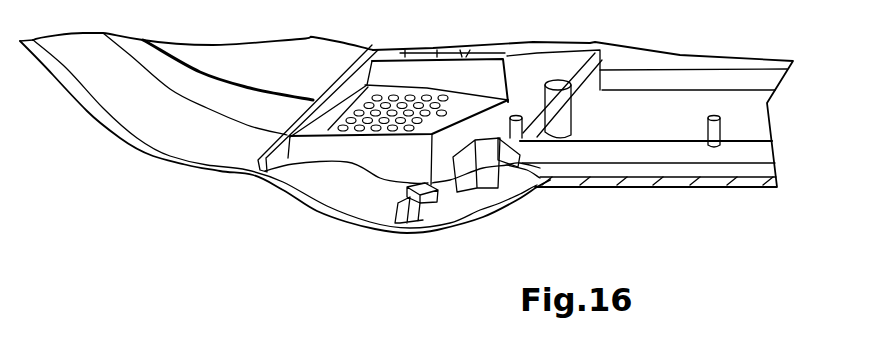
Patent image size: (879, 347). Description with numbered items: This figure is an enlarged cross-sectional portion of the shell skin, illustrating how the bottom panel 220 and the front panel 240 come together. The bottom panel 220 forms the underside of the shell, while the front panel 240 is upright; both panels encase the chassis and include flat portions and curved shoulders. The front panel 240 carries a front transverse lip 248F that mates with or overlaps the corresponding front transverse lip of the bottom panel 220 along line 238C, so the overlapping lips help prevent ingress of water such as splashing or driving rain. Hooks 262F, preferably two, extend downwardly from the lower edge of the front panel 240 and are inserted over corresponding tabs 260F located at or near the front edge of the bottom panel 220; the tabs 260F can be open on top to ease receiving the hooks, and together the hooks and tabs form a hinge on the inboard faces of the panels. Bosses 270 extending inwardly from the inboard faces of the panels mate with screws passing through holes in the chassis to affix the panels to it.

The front panel 240 is at (173, 165).
The bottom panel 220 is at (647, 180).
The hooks 262F is at (407, 188).
The front transverse lip 248F is at (407, 235).
The line 238C is at (412, 222).
The tabs 260F is at (422, 208).
The bosses 270 is at (486, 165).